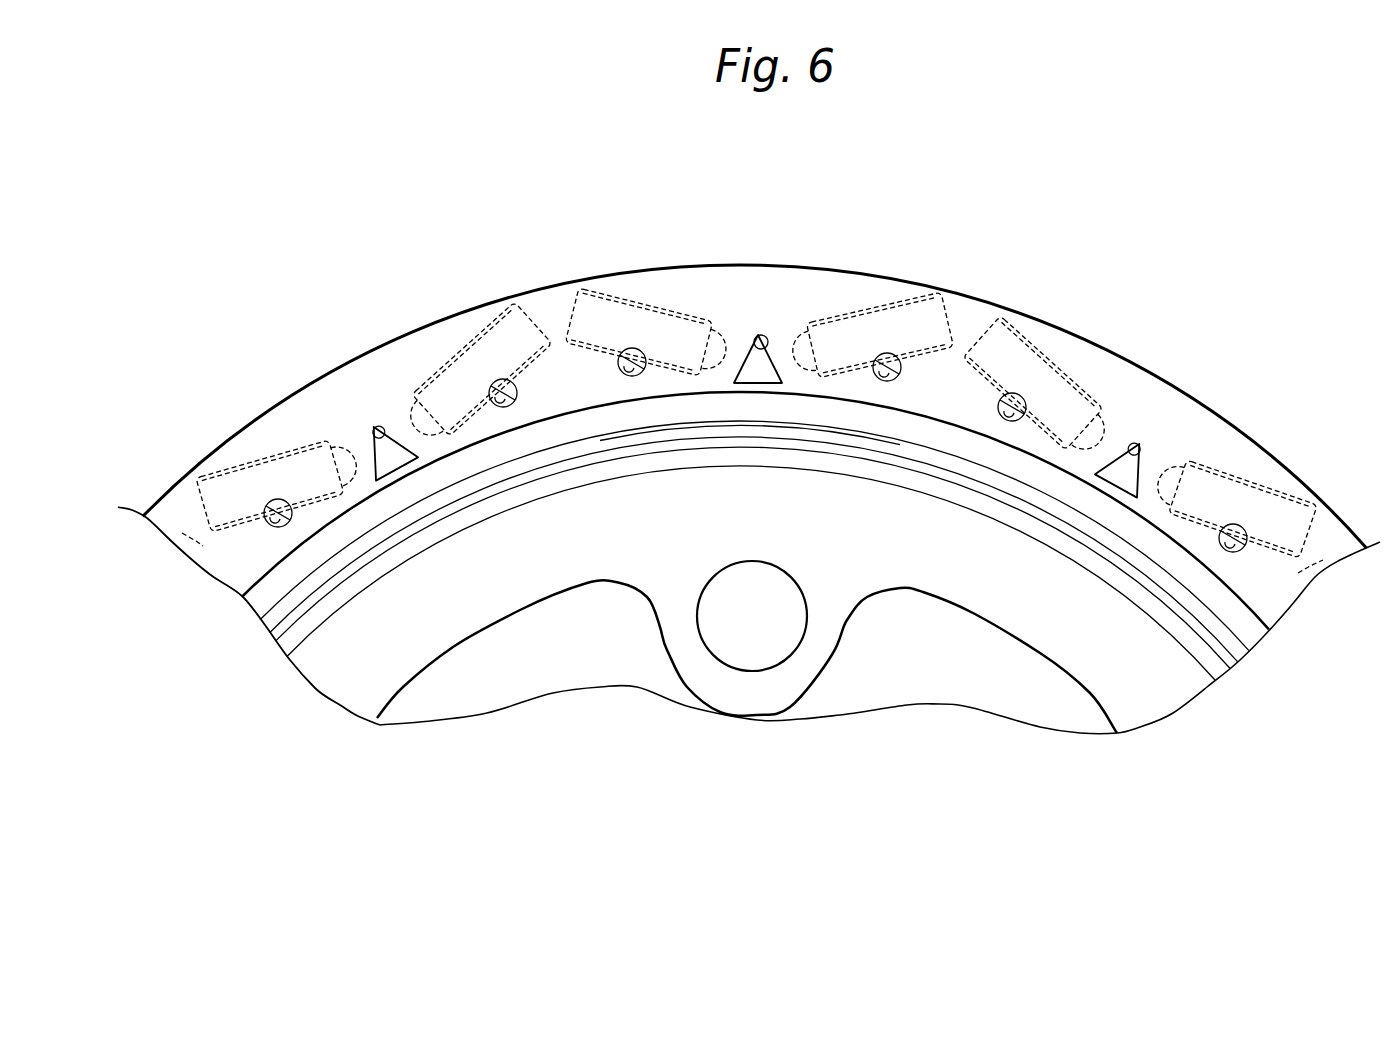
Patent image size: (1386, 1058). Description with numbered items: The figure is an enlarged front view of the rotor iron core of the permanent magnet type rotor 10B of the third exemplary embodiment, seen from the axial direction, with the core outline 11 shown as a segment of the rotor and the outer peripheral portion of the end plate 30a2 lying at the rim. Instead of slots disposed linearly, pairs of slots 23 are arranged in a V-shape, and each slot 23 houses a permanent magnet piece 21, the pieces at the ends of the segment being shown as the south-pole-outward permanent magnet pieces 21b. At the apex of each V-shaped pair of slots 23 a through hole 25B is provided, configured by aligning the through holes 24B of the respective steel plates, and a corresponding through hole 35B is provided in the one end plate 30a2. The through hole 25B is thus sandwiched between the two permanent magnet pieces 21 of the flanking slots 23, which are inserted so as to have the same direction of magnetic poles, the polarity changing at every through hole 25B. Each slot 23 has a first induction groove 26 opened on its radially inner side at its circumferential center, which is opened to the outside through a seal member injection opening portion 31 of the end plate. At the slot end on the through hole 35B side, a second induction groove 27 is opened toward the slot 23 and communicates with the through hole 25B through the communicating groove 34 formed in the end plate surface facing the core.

The permanent magnet type rotor 10B is at (1044, 271).
The rotor core 11 is at (1028, 708).
The permanent magnet piece 21 is at (508, 338).
The permanent magnet piece 21b is at (302, 468).
The slot 23 is at (607, 298).
The through hole 24B is at (745, 335).
The through hole 25B is at (745, 335).
The first induction groove 26 is at (643, 375).
The second induction groove 27 is at (725, 408).
The end plate 30a2 is at (1245, 457).
The seal member injection opening portion 31 is at (885, 381).
The communicating groove 34 is at (792, 408).
The through hole 35B is at (373, 430).